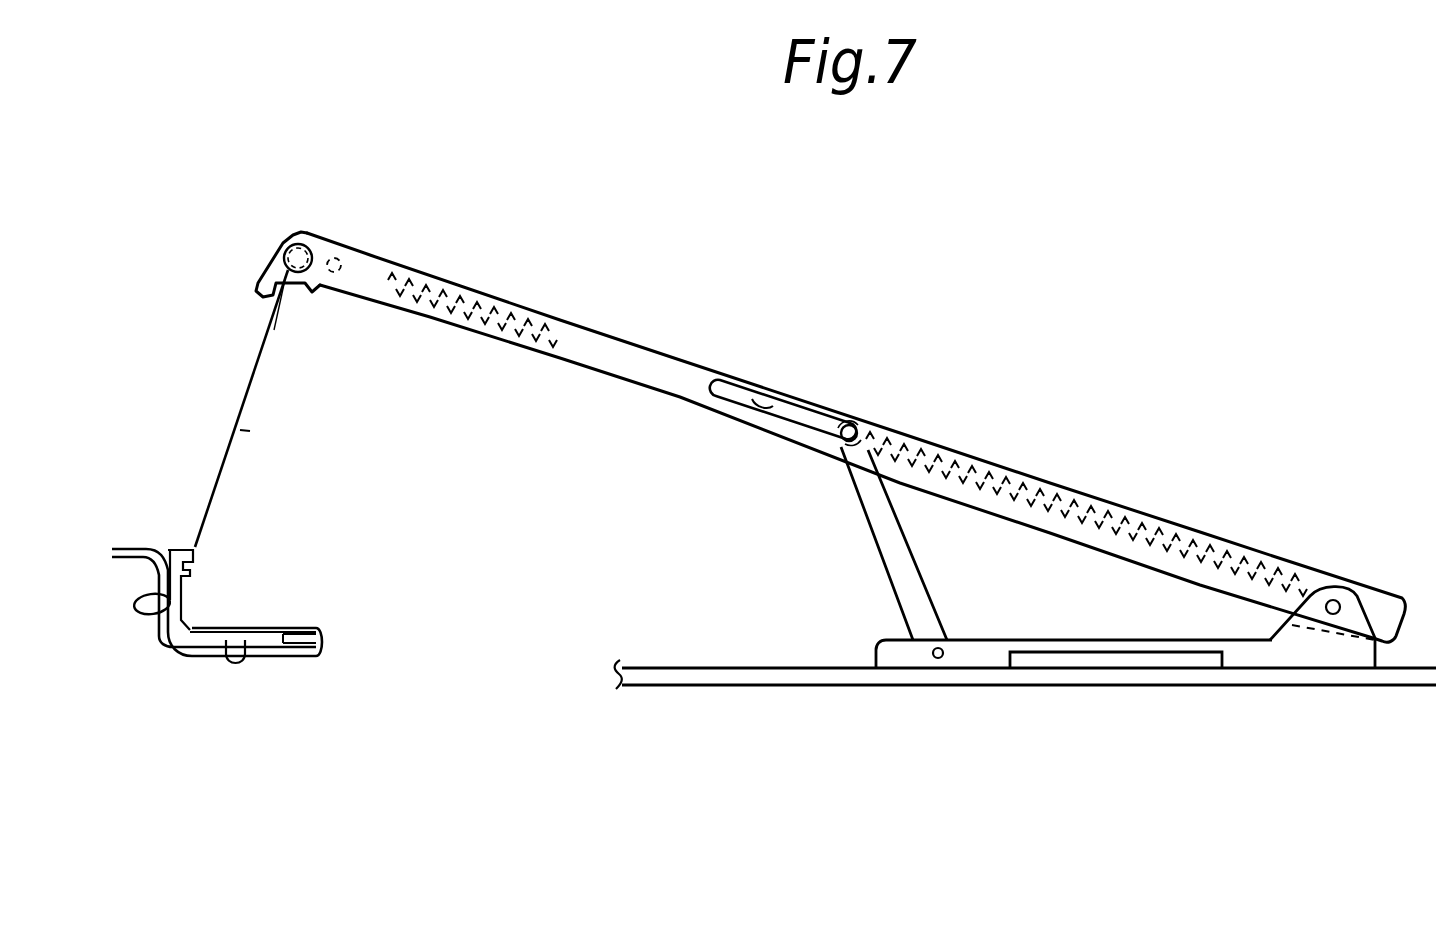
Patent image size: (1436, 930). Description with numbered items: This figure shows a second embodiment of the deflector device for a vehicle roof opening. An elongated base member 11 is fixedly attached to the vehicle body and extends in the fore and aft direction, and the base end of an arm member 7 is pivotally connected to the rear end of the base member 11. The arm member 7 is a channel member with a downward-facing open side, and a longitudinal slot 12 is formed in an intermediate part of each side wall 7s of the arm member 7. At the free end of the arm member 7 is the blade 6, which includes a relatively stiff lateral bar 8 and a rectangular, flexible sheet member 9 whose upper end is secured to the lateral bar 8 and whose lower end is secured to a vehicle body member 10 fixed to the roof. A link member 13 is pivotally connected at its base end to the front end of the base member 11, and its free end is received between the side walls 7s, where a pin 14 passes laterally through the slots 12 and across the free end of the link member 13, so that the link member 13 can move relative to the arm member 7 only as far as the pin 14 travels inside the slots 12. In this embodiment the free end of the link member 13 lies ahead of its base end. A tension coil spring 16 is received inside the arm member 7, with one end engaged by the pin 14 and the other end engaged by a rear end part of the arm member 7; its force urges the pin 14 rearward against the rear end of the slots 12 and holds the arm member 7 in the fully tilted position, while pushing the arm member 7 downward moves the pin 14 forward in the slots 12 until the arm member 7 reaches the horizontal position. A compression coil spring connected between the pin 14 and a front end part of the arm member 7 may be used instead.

The blade 6 is at (244, 352).
The arm member 7 is at (608, 334).
The side wall 7s is at (1286, 570).
The lateral bar 8 is at (290, 248).
The flexible sheet member 9 is at (218, 474).
The vehicle body member 10 is at (182, 650).
The base member 11 is at (1250, 658).
The longitudinal slot 12 is at (783, 406).
The link member 13 is at (879, 547).
The pin 14 is at (858, 426).
The tension coil spring 16 is at (1118, 517).